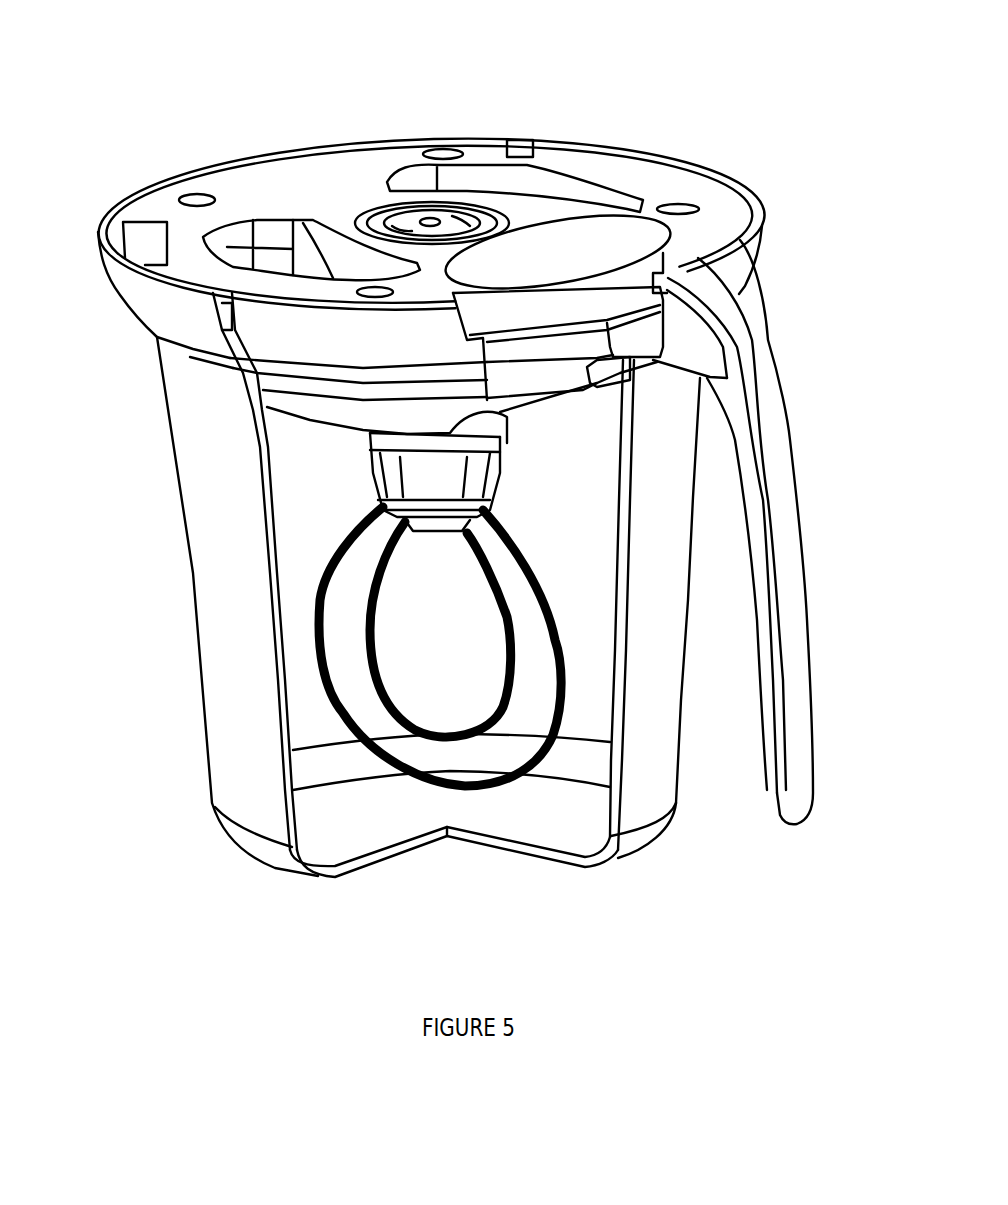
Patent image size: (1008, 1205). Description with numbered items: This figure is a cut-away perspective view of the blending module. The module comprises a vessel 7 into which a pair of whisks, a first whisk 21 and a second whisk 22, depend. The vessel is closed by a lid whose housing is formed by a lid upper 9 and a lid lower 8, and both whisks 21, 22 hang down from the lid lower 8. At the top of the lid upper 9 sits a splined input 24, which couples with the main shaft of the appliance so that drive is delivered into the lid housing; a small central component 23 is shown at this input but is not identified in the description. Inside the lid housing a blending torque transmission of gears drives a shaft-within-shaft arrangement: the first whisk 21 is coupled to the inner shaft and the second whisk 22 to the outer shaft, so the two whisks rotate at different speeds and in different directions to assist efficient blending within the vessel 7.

The vessel 7 is at (648, 533).
The lid lower 8 is at (417, 356).
The lid upper 9 is at (342, 182).
The first whisk 21 is at (503, 707).
The second whisk 22 is at (560, 710).
The lamp socket 23 is at (433, 212).
The splined input 24 is at (508, 206).